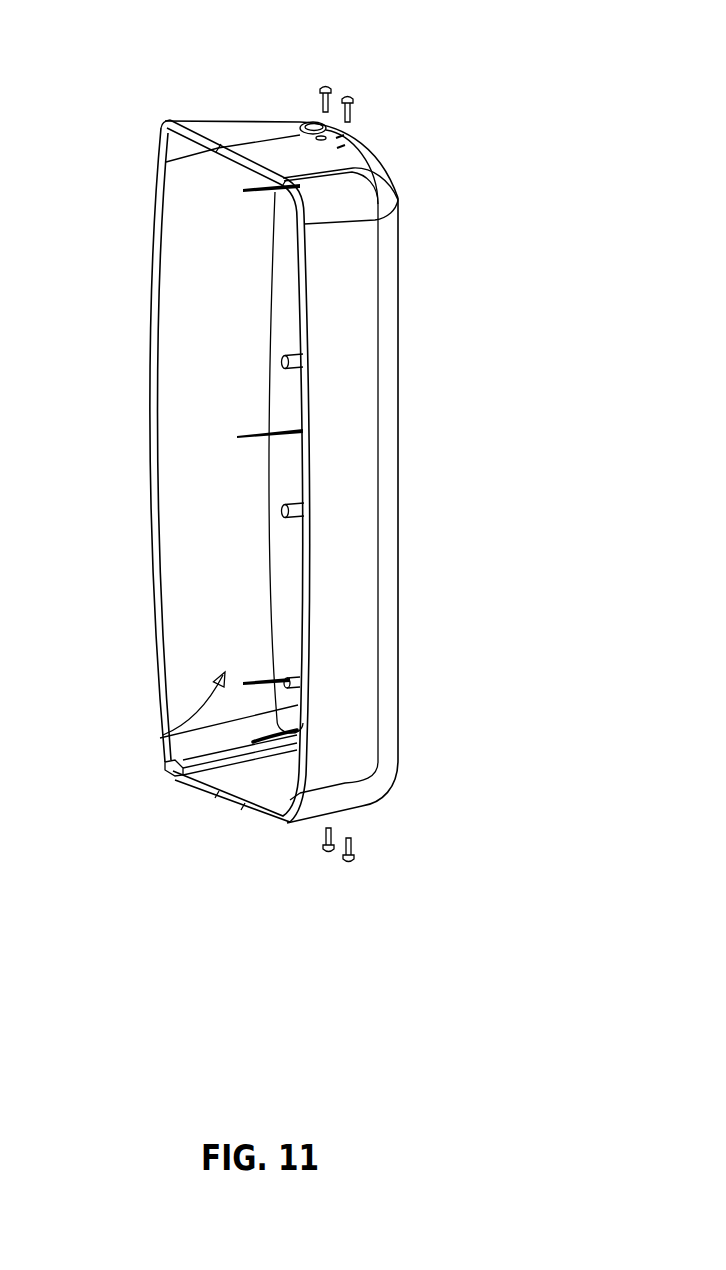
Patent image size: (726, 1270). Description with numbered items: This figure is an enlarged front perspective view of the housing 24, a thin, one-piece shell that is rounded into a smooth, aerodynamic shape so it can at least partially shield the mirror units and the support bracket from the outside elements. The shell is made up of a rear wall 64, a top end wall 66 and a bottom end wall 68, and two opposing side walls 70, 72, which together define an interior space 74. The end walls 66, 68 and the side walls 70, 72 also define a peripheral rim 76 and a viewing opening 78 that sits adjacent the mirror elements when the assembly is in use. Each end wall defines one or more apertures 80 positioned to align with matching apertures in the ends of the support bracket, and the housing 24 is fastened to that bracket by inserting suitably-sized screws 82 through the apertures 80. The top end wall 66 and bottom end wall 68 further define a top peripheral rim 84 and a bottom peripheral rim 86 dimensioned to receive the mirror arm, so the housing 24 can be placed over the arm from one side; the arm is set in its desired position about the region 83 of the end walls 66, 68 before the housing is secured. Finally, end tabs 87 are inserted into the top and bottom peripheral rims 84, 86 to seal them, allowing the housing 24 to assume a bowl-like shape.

The housing 24 is at (188, 218).
The rear wall 64 is at (398, 405).
The top end wall 66 is at (310, 165).
The bottom end wall 68 is at (280, 818).
The side wall 70 is at (350, 490).
The side wall 72 is at (182, 542).
The interior space 74 is at (187, 722).
The peripheral rim 76 is at (148, 412).
The viewing opening 78 is at (183, 663).
The apertures 80 is at (352, 140).
The screws 82 is at (332, 86).
The region of end walls 83 is at (305, 122).
The top peripheral rim 84 is at (222, 117).
The bottom peripheral rim 86 is at (290, 768).
The end tabs 87 is at (175, 143).